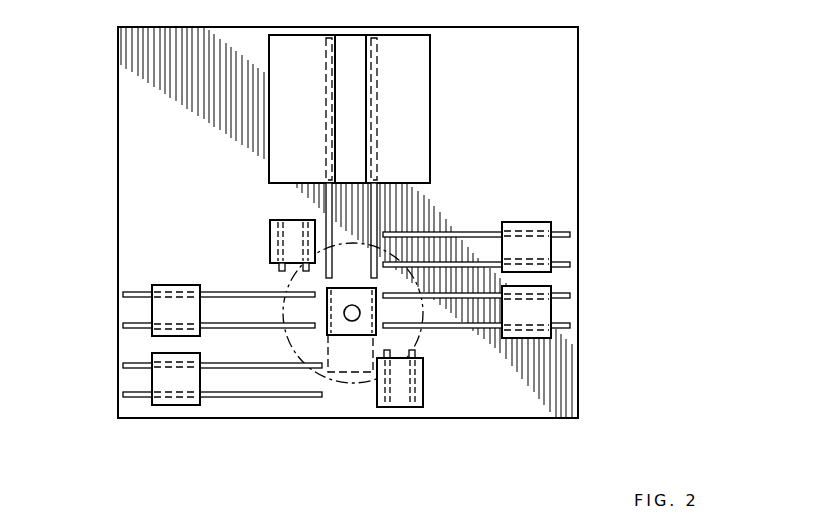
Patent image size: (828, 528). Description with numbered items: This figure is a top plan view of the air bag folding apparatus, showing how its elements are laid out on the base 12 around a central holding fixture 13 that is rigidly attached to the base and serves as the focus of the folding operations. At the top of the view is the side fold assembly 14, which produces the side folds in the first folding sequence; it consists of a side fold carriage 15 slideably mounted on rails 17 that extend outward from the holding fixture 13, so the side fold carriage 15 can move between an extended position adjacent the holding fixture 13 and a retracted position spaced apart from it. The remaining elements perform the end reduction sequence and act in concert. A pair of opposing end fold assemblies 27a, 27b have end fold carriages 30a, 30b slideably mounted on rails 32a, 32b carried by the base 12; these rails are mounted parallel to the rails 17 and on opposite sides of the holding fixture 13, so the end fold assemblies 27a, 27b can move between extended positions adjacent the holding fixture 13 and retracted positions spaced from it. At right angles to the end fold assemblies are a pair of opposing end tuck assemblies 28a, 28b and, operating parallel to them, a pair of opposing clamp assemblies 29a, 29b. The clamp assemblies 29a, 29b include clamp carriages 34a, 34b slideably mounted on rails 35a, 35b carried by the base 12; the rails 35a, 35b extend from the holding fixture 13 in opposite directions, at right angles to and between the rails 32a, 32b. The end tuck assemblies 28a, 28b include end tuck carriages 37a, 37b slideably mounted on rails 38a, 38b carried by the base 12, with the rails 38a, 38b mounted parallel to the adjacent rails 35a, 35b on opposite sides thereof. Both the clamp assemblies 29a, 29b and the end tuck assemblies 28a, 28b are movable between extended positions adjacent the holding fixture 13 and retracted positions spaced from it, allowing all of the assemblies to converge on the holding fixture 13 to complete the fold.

The base 12 is at (168, 151).
The holding fixture 13 is at (353, 327).
The side fold assembly 14 is at (379, 109).
The side fold carriage 15 is at (431, 135).
The rails 17 is at (378, 206).
The end fold assembly 27a is at (413, 402).
The end fold assembly 27b is at (262, 226).
The end tuck assembly 28a is at (174, 408).
The end tuck assembly 28b is at (518, 223).
The clamp assembly 29a is at (170, 289).
The clamp assembly 29b is at (528, 329).
The end fold carriage 30a is at (424, 405).
The end fold carriage 30b is at (270, 236).
The rail 32a is at (421, 356).
The rail 32b is at (278, 268).
The clamp carriage 34a is at (166, 288).
The clamp carriage 34b is at (551, 338).
The rail 35a is at (222, 296).
The rail 35b is at (478, 330).
The end tuck carriage 37a is at (172, 405).
The end tuck carriage 37b is at (530, 222).
The rail 38a is at (277, 398).
The rail 38b is at (478, 231).